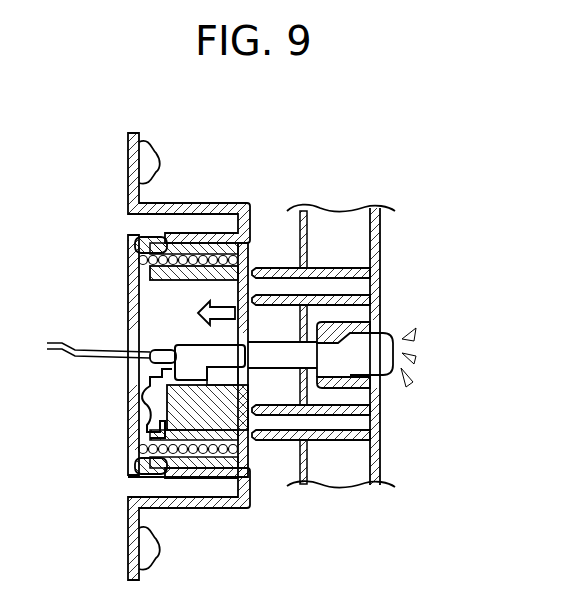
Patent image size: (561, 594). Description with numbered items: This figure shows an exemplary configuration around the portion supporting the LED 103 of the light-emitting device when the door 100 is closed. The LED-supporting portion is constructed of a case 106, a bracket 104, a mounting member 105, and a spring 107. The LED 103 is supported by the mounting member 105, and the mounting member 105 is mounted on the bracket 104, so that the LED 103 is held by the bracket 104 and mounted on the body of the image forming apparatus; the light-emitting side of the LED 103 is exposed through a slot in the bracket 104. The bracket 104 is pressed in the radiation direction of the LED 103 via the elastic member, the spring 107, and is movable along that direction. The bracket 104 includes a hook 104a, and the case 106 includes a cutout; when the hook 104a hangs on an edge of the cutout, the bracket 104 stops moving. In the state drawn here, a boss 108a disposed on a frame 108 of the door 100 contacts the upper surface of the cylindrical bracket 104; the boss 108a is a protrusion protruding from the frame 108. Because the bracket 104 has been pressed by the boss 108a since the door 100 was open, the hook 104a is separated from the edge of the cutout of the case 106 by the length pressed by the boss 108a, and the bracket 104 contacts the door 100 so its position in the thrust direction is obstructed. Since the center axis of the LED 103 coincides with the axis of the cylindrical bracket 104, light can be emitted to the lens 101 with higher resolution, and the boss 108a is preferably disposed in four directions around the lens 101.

The door 100 is at (424, 207).
The lens 101 is at (392, 330).
The LED 103 is at (178, 344).
The bracket 104 is at (253, 453).
The hook 104a is at (150, 243).
The mounting member 105 is at (162, 372).
The case 106 is at (243, 204).
The spring 107 is at (130, 473).
The frame 108 is at (380, 445).
The boss 108a is at (332, 268).